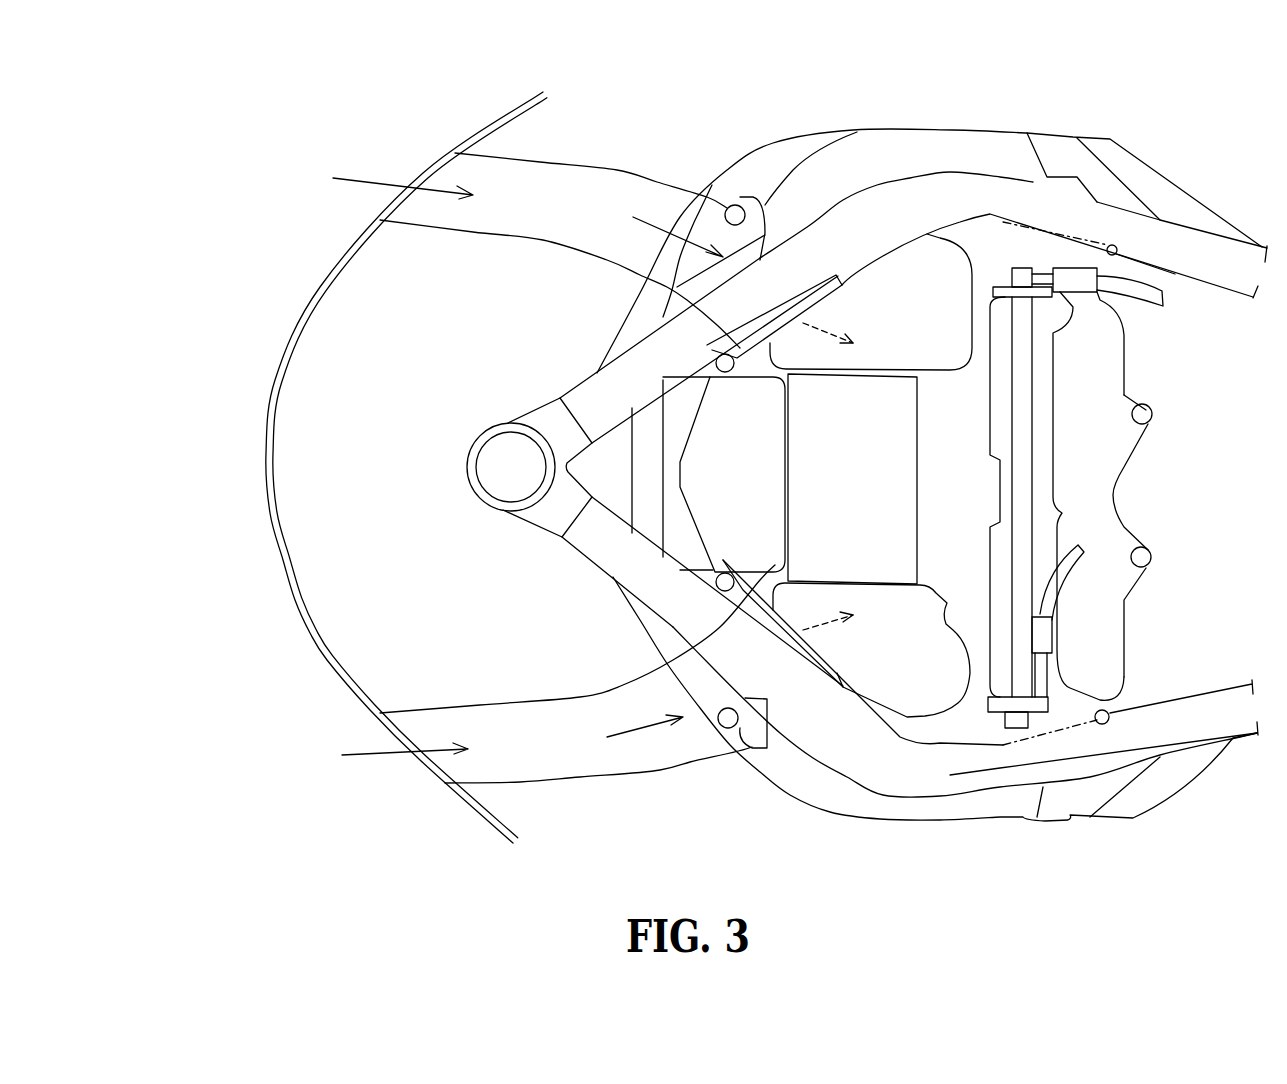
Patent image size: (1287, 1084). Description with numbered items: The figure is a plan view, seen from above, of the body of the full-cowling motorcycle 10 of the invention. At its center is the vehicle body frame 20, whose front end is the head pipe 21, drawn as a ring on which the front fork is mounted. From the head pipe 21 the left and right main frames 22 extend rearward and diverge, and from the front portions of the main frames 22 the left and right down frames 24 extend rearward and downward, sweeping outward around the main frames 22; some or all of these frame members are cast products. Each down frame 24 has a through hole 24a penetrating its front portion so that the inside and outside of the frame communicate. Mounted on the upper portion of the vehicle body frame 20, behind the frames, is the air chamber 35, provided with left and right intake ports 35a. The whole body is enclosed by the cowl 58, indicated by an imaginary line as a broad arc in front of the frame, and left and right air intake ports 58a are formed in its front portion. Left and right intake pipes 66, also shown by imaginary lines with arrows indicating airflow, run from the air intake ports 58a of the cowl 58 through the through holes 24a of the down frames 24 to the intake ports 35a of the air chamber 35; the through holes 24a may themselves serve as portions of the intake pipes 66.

The vehicle 10 is at (201, 152).
The vehicle body frame 20 is at (494, 400).
The head pipe 21 is at (472, 468).
The main frames 22 is at (622, 355).
The down frames 24 is at (790, 150).
The through holes 24a is at (738, 205).
The air chamber 35 is at (1100, 463).
The intake ports 35a is at (840, 285).
The cowl 58 is at (282, 560).
The air intake ports 58a is at (380, 217).
The intake pipes 66 is at (618, 170).